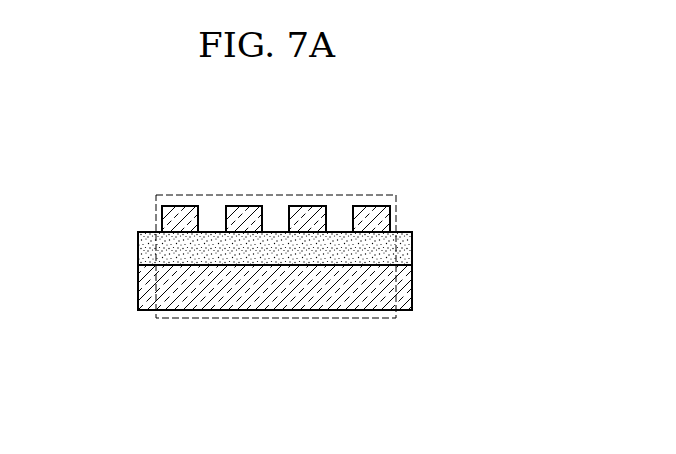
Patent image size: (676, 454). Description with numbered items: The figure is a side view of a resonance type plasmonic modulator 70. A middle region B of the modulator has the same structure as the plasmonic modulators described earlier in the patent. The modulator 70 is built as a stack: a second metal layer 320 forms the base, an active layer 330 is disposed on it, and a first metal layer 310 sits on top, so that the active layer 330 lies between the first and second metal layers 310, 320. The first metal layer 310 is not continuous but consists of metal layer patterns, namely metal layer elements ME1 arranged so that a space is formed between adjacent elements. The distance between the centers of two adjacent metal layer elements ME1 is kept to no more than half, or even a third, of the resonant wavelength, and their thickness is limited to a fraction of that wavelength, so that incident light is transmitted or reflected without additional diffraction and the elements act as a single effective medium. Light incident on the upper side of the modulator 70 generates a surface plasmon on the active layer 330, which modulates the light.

The resonance type plasmonic modulator 70 is at (105, 178).
The middle region B is at (282, 195).
The metal layer element ME1 is at (384, 213).
The active layer 330 is at (410, 252).
The second metal layer 320 is at (410, 286).
The first metal layer 310 is at (299, 284).